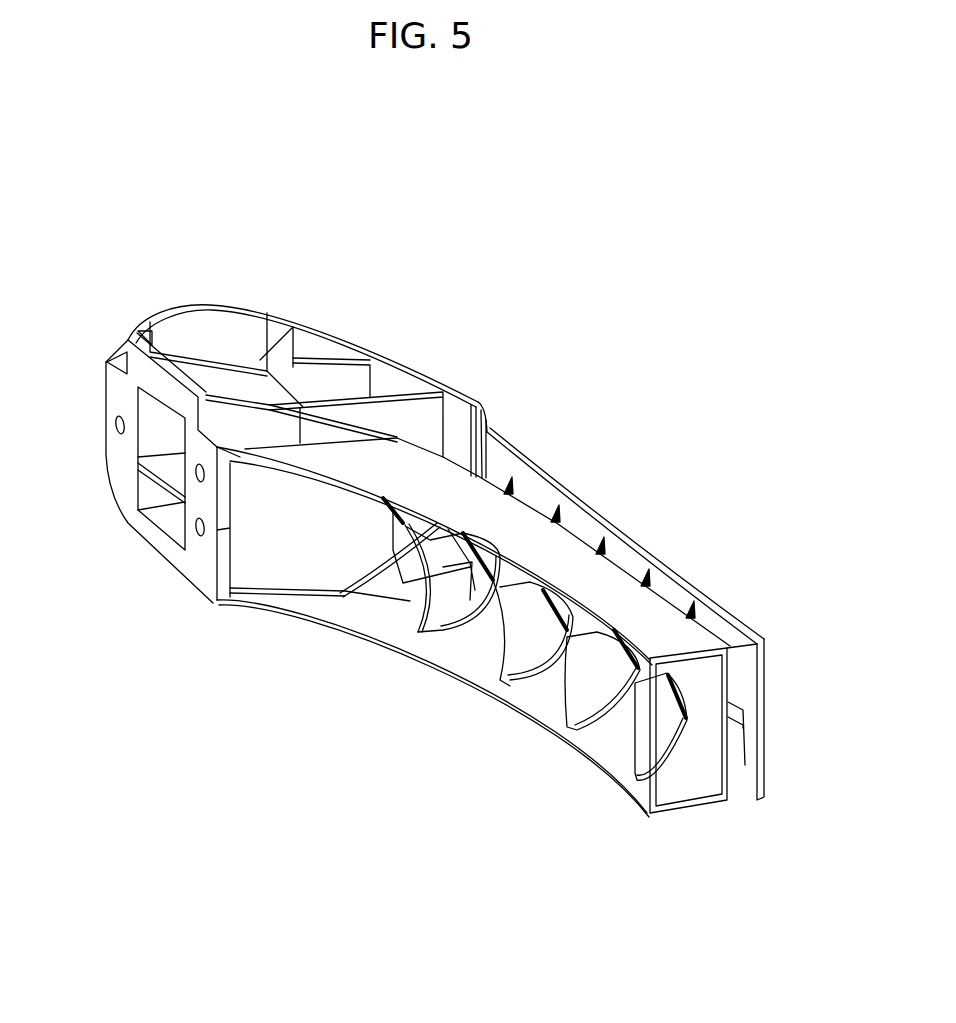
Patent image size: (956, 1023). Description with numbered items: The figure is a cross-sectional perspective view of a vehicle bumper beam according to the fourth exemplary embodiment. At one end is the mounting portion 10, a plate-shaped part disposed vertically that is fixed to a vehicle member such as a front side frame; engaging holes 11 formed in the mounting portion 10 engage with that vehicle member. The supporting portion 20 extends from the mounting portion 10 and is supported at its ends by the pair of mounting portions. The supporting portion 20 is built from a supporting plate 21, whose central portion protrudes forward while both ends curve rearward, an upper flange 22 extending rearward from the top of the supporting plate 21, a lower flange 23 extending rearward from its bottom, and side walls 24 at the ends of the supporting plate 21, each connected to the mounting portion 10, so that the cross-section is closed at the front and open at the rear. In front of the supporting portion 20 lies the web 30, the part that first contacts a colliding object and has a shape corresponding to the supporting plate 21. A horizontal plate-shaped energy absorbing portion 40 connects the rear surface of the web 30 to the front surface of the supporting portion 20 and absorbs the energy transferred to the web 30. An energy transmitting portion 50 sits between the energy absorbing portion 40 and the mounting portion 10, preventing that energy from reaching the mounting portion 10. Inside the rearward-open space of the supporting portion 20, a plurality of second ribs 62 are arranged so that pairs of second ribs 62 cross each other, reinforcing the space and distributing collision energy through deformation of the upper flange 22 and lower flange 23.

The mounting portion 10 is at (176, 556).
The engaging holes 11 is at (117, 432).
The supporting portion 20 is at (295, 747).
The supporting plate 21 is at (407, 598).
The upper flange 22 is at (345, 465).
The lower flange 23 is at (537, 700).
The side walls 24 is at (270, 553).
The web 30 is at (765, 678).
The energy absorbing portion 40 is at (743, 703).
The energy transmitting portion 50 is at (215, 388).
The second ribs 62 is at (640, 732).